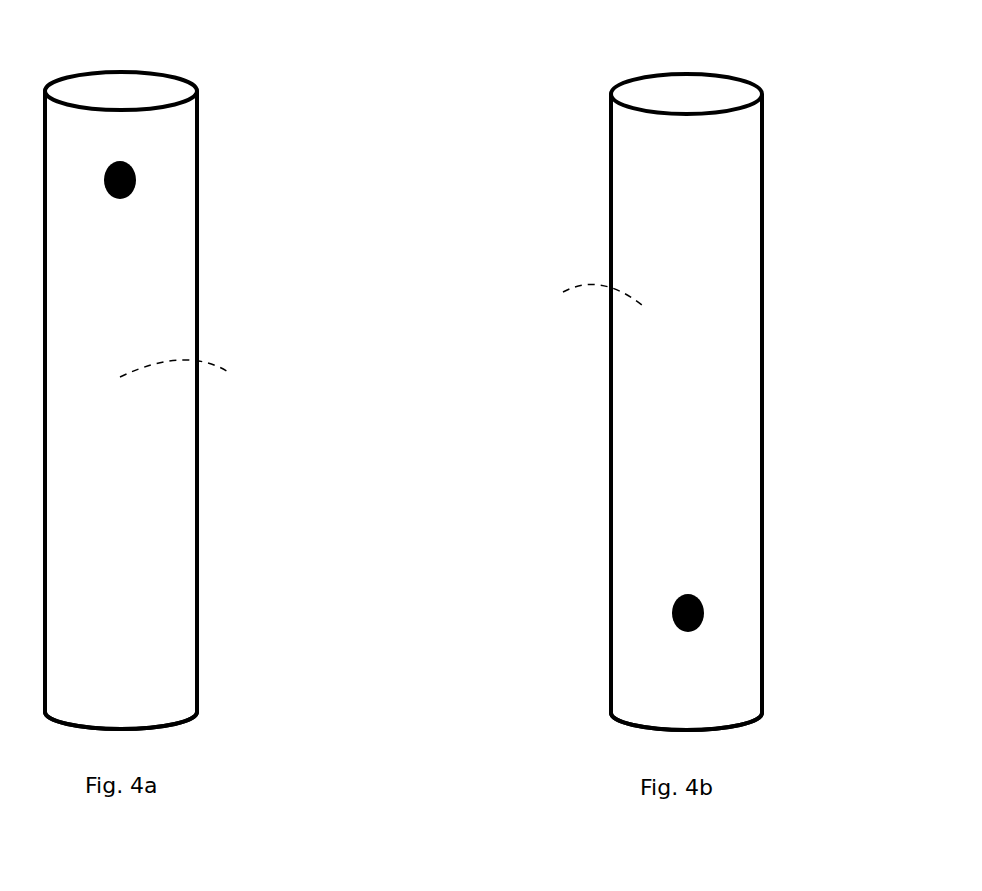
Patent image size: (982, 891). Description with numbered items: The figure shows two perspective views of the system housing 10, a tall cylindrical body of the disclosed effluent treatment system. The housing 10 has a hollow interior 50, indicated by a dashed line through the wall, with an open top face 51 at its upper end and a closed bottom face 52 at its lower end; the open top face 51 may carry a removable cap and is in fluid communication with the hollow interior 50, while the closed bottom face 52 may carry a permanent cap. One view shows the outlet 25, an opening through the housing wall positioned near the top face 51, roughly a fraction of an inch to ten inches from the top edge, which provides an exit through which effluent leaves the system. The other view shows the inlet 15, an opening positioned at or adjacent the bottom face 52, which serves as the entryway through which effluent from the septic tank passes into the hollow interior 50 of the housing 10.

In FIG. 4A, the housing 10 is at (270, 68).
In FIG. 4B, the housing 10 is at (578, 106).
In FIG. 4B, the inlet 15 is at (673, 605).
In FIG. 4A, the outlet 25 is at (137, 180).
In FIG. 4A, the hollow interior 50 is at (196, 378).
In FIG. 4B, the hollow interior 50 is at (576, 305).
In FIG. 4A, the open top face 51 is at (198, 97).
In FIG. 4B, the open top face 51 is at (738, 78).
In FIG. 4A, the closed bottom face 52 is at (190, 717).
In FIG. 4B, the closed bottom face 52 is at (636, 726).